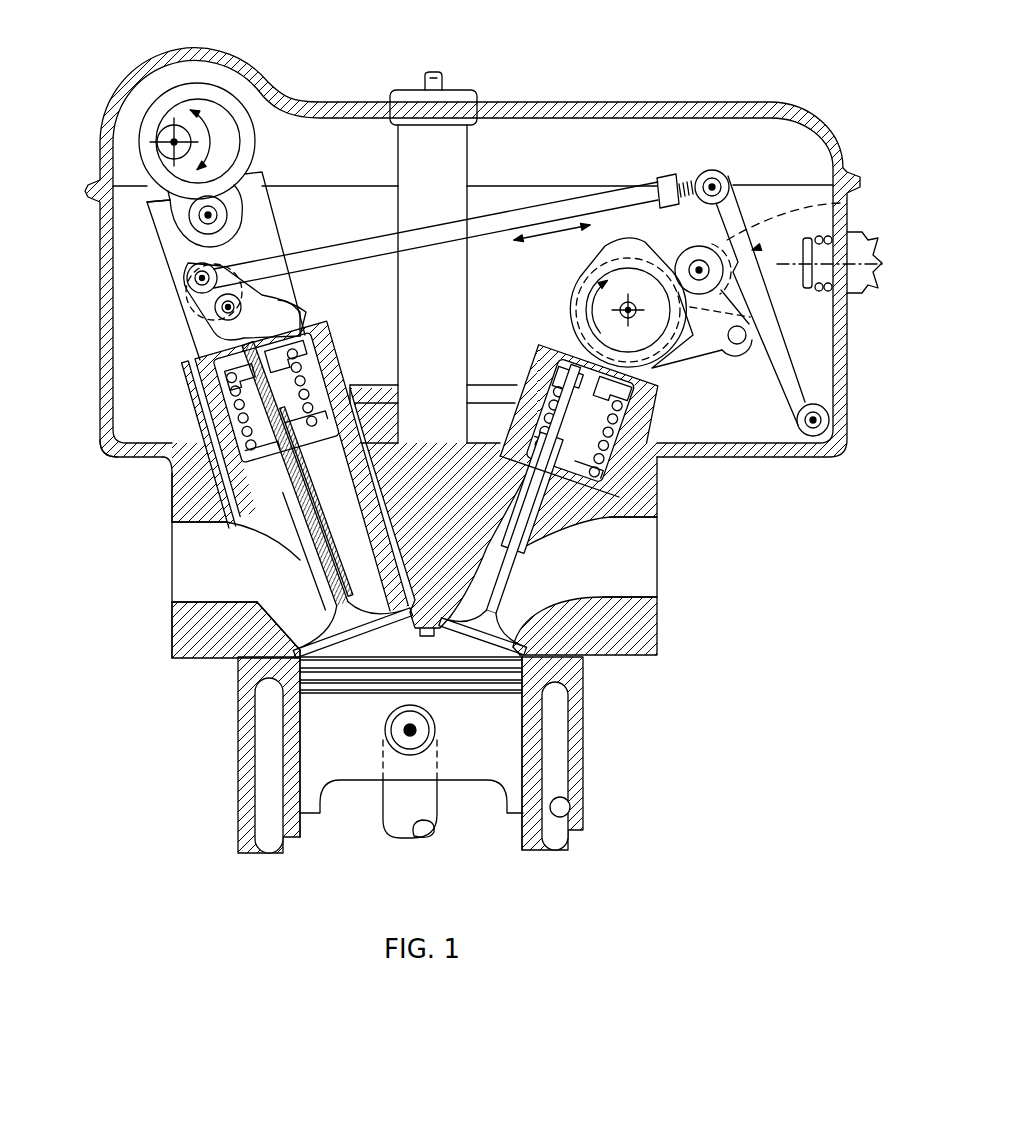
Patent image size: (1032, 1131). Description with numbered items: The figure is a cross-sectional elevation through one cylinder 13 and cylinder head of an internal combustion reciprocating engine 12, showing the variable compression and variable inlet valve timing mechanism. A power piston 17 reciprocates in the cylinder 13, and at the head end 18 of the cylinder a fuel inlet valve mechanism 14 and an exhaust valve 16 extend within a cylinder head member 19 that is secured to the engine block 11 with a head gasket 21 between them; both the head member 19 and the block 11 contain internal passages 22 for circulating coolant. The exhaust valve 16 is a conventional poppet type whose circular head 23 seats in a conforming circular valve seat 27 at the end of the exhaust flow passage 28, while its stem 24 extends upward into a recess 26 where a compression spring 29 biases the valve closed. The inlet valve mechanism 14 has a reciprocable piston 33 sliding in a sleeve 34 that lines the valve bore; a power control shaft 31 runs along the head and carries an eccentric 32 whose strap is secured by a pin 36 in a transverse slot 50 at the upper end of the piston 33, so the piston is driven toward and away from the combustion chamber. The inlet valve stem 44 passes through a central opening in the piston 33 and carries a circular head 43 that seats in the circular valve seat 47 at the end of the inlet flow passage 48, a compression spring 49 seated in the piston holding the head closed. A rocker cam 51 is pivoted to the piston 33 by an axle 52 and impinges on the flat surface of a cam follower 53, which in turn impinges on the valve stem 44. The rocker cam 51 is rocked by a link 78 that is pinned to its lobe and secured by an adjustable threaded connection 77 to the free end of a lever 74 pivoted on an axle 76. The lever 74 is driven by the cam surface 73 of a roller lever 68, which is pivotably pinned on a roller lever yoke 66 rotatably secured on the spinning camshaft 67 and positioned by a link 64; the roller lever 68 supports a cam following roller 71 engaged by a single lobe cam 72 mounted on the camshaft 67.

The engine block 11 is at (583, 710).
The internal combustion reciprocating engine 12 is at (213, 686).
The cylinder 13 is at (505, 845).
The inlet valve mechanism 14 is at (223, 490).
The exhaust valve 16 is at (660, 467).
The power piston 17 is at (486, 746).
The head end 18 is at (427, 636).
The cylinder head member 19 is at (415, 443).
The head gasket 21 is at (100, 190).
The internal passages 22 is at (583, 817).
The circular head 23 is at (478, 642).
The stem 24 is at (584, 509).
The recess 26 is at (612, 457).
The circular valve seat 27 is at (520, 642).
The exhaust flow passage 28 is at (610, 522).
The compression spring 29 is at (540, 413).
The power control shaft 31 is at (158, 124).
The eccentric 32 is at (227, 92).
The reciprocable piston 33 is at (267, 187).
The sleeve 34 is at (197, 410).
The pin 36 is at (203, 218).
The circular head 43 is at (348, 655).
The valve stem 44 is at (217, 485).
The circular valve seat 47 is at (300, 648).
The inlet flow passage 48 is at (225, 580).
The compression spring 49 is at (103, 441).
The transverse slot 50 is at (257, 233).
The rocker cam 51 is at (230, 328).
The axle 52 is at (215, 305).
The cam follower 53 is at (303, 310).
The link 64 is at (382, 383).
The roller lever yoke 66 is at (703, 362).
The camshaft 67 is at (605, 300).
The roller lever 68 is at (740, 345).
The cam following roller 71 is at (840, 203).
The single lobe cam 72 is at (632, 237).
The cam surface 73 is at (752, 250).
The lever 74 is at (810, 338).
The axle 76 is at (826, 428).
The adjustable threaded connection 77 is at (694, 182).
The link 78 is at (525, 207).